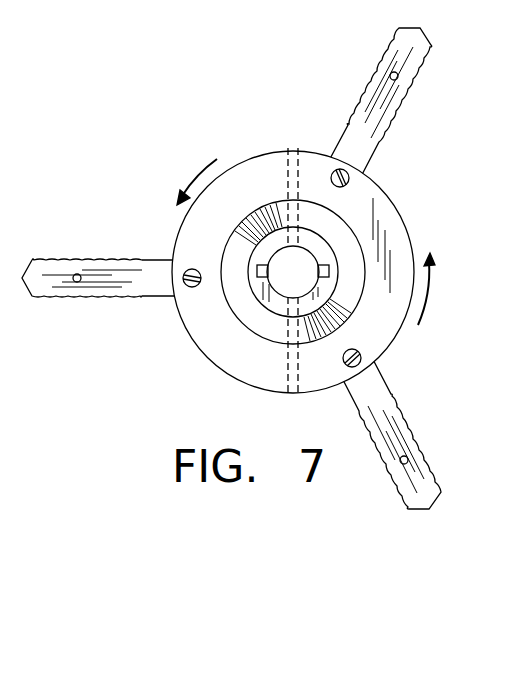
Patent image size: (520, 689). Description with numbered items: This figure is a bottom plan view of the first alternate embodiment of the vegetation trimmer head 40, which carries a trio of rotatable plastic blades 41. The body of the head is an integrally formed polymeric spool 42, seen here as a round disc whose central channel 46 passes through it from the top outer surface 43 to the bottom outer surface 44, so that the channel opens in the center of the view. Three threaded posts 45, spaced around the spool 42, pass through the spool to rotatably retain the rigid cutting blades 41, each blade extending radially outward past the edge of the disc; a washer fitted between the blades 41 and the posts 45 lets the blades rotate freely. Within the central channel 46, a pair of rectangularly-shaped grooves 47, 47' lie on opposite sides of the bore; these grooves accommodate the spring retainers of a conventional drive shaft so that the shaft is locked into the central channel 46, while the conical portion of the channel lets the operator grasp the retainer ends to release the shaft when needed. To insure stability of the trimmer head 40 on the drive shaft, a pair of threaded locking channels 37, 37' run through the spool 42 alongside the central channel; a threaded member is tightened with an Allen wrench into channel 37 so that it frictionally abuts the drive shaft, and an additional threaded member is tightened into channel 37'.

The vegetation trimmer head 40 is at (214, 104).
The rotatable plastic blades 41 is at (243, 268).
The polymeric spool 42 is at (438, 230).
The top outer surface 43 is at (268, 277).
The bottom outer surface 44 is at (393, 227).
The threaded posts 45 is at (358, 192).
The central channel 46 is at (274, 247).
The rectangularly-shaped groove 47 is at (230, 256).
The rectangularly-shaped groove 47' is at (358, 296).
The threaded locking channel 37 is at (230, 255).
The threaded locking channel 37' is at (232, 285).